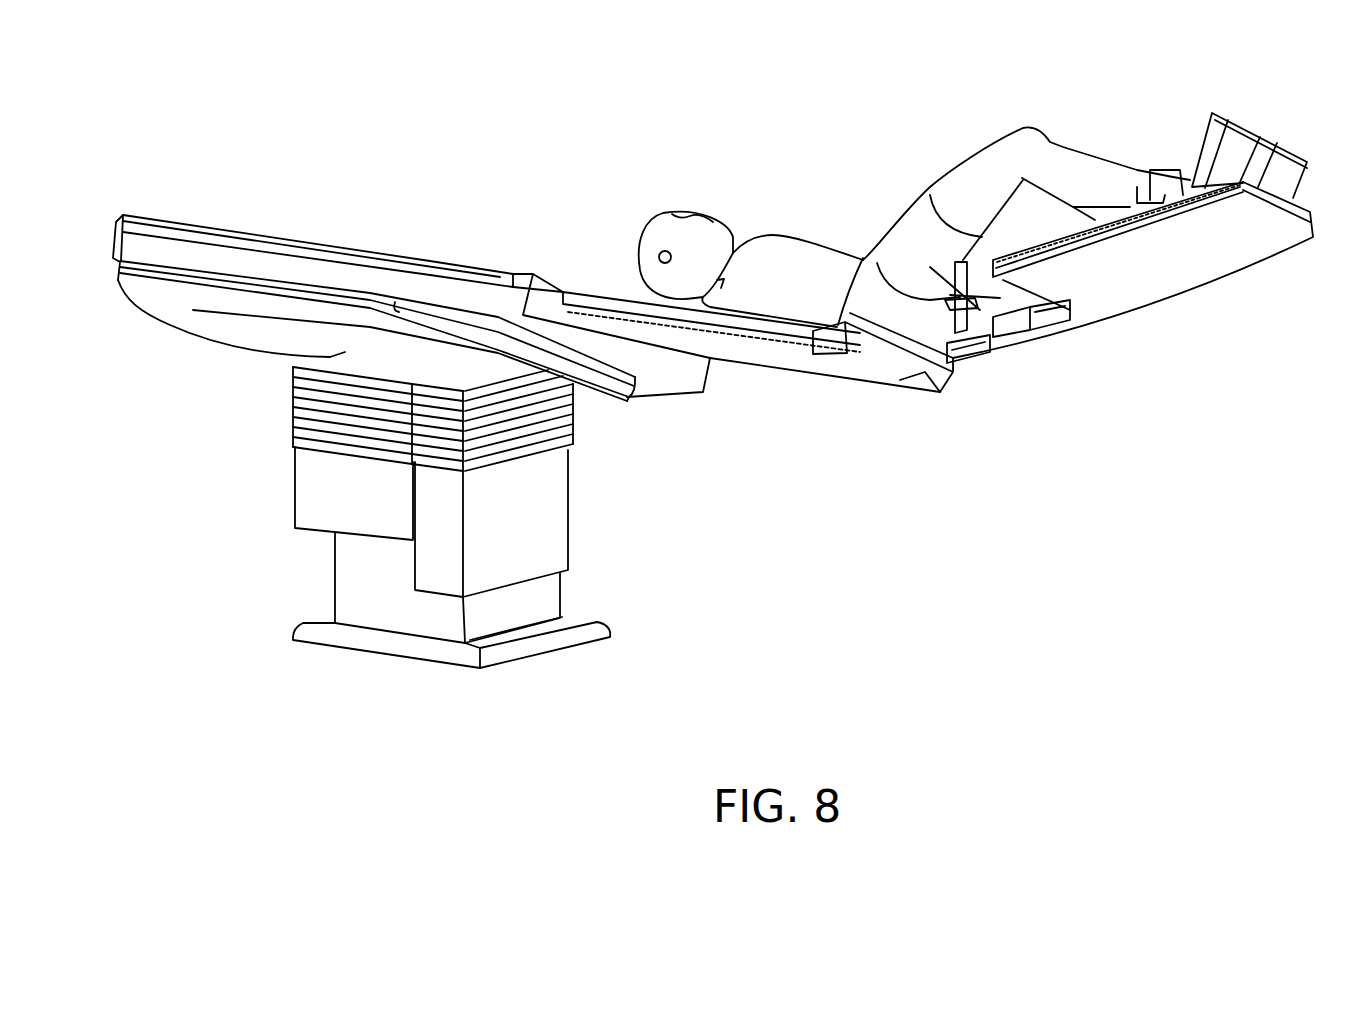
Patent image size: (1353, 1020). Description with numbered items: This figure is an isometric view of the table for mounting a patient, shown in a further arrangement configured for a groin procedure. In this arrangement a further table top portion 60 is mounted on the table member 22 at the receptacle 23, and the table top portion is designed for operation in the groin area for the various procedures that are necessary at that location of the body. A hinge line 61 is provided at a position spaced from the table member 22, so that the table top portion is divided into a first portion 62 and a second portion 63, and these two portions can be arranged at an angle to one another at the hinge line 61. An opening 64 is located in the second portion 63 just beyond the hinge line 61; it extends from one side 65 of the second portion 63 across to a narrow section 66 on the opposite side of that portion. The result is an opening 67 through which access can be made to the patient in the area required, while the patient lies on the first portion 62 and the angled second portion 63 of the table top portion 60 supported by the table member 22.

The table member 22 is at (308, 268).
The receptacle 23 is at (550, 293).
The further table top portion 60 is at (845, 438).
The hinge line 61 is at (950, 395).
The first portion 62 is at (740, 352).
The second portion 63 is at (1123, 303).
The opening 64 is at (1047, 330).
The side 65 is at (1037, 253).
The narrow section 66 is at (1000, 357).
The opening 67 is at (1045, 300).